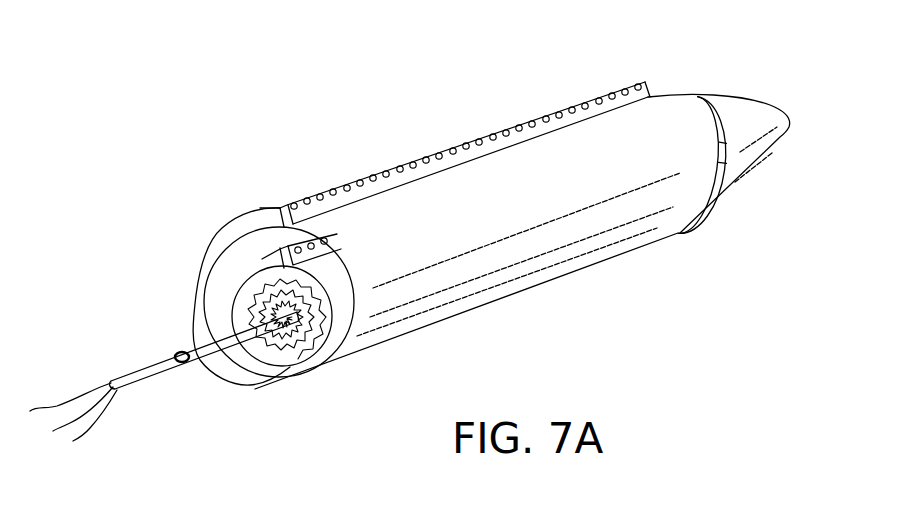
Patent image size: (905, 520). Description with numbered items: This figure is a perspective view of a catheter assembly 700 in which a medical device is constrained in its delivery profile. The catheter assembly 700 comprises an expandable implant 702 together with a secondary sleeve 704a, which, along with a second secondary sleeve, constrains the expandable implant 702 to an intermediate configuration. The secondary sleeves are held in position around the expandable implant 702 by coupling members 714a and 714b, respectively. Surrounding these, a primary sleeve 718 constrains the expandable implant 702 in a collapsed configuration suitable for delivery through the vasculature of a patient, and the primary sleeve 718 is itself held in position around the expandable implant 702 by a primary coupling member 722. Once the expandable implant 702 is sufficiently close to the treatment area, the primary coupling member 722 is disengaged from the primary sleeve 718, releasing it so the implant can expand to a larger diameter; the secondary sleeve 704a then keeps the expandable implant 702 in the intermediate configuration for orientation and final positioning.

The catheter assembly 700 is at (236, 130).
The expandable implant 702 is at (310, 331).
The secondary sleeve 704a is at (315, 343).
The coupling member 714a is at (206, 287).
The coupling member 714b is at (238, 384).
The primary sleeve 718 is at (657, 133).
The primary coupling member 722 is at (206, 258).